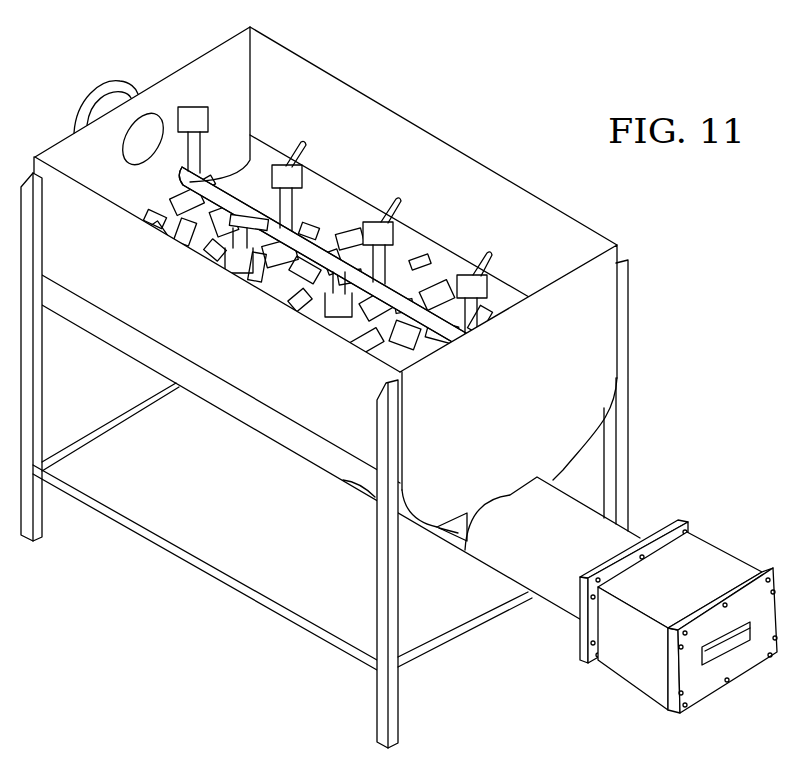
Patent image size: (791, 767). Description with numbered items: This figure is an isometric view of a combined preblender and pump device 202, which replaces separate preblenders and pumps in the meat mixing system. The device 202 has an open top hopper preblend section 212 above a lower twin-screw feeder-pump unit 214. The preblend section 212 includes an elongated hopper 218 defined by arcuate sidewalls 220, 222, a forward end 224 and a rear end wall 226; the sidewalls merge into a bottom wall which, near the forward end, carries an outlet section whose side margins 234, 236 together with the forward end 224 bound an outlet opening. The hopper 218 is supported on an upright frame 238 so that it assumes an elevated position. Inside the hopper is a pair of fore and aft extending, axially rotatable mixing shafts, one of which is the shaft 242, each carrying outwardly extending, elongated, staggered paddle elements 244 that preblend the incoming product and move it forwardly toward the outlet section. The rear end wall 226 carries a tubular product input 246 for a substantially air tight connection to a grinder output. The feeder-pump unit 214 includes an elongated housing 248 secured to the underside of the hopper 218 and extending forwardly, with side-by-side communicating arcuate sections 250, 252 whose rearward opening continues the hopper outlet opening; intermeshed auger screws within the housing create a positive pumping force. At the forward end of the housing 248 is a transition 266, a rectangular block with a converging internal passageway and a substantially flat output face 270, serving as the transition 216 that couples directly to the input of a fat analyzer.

The combined preblender and pump device 202 is at (400, 387).
The hopper preblend section 212 is at (356, 310).
The twin-screw feeder-pump unit 214 is at (622, 587).
The transition 216 is at (688, 611).
The hopper 218 is at (356, 310).
The sidewall 220 is at (378, 95).
The sidewall 222 is at (263, 373).
The forward end 224 is at (602, 300).
The rear end wall 226 is at (203, 72).
The side margin 234 is at (457, 532).
The side margin 236 is at (552, 477).
The upright frame 238 is at (131, 571).
The mixing shaft 242 is at (387, 293).
The paddle element 244 is at (385, 230).
The tubular product input 246 is at (95, 97).
The housing 248 is at (552, 624).
The arcuate section 250 is at (517, 566).
The arcuate section 252 is at (632, 535).
The transition 266 is at (647, 667).
The output face 270 is at (745, 667).